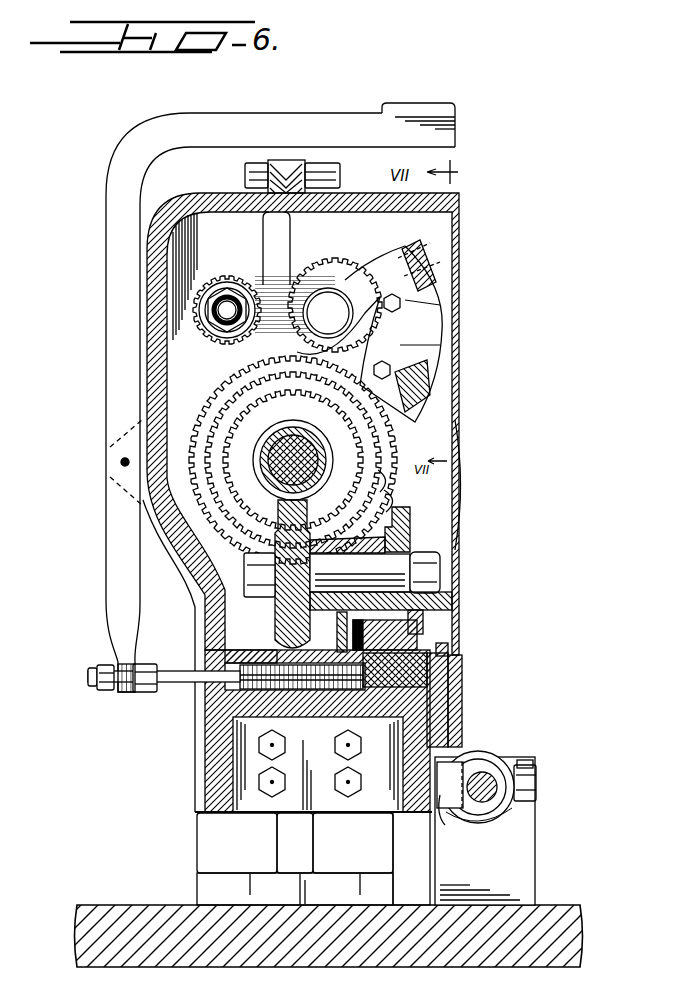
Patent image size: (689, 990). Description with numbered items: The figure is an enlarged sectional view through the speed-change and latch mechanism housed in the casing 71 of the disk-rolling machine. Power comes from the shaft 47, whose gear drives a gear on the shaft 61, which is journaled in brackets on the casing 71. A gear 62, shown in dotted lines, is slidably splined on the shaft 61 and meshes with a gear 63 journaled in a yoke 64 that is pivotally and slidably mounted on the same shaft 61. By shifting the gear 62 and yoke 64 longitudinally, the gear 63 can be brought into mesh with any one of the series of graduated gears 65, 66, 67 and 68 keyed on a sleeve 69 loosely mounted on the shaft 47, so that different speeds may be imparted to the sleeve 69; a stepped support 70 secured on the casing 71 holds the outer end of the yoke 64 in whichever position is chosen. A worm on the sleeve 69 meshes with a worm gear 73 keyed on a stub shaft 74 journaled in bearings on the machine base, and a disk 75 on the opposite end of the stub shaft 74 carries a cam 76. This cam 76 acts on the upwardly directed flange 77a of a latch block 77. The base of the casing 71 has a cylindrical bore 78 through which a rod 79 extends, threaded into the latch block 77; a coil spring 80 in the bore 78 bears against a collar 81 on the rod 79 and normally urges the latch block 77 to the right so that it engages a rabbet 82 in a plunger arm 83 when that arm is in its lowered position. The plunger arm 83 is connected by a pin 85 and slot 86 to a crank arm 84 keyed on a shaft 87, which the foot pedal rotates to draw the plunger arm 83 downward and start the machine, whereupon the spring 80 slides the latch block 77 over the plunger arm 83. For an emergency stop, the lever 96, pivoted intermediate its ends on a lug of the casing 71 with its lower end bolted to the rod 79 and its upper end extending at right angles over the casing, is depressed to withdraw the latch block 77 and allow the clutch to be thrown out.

The shaft 47 is at (265, 430).
The shaft 61 is at (227, 318).
The gear 62 is at (185, 282).
The gear 63 is at (320, 278).
The yoke 64 is at (377, 270).
The graduated gear 65 is at (387, 430).
The graduated gear 66 is at (387, 447).
The graduated gear 67 is at (380, 480).
The graduated gear 68 is at (387, 495).
The sleeve 69 is at (260, 470).
The stepped support 70 is at (420, 353).
The casing 71 is at (365, 192).
The worm gear 73 is at (280, 627).
The stub shaft 74 is at (390, 562).
The disk 75 is at (410, 527).
The cam 76 is at (420, 642).
The latch block 77 is at (408, 672).
The flange 77a is at (413, 602).
The cylindrical bore 78 is at (215, 660).
The rod 79 is at (180, 683).
The coil spring 80 is at (297, 666).
The collar 81 is at (333, 666).
The rabbet 82 is at (448, 648).
The plunger arm 83 is at (437, 713).
The crank arm 84 is at (463, 763).
The pin 85 is at (438, 793).
The slot 86 is at (445, 800).
The shaft 87 is at (533, 828).
The lever 96 is at (313, 120).